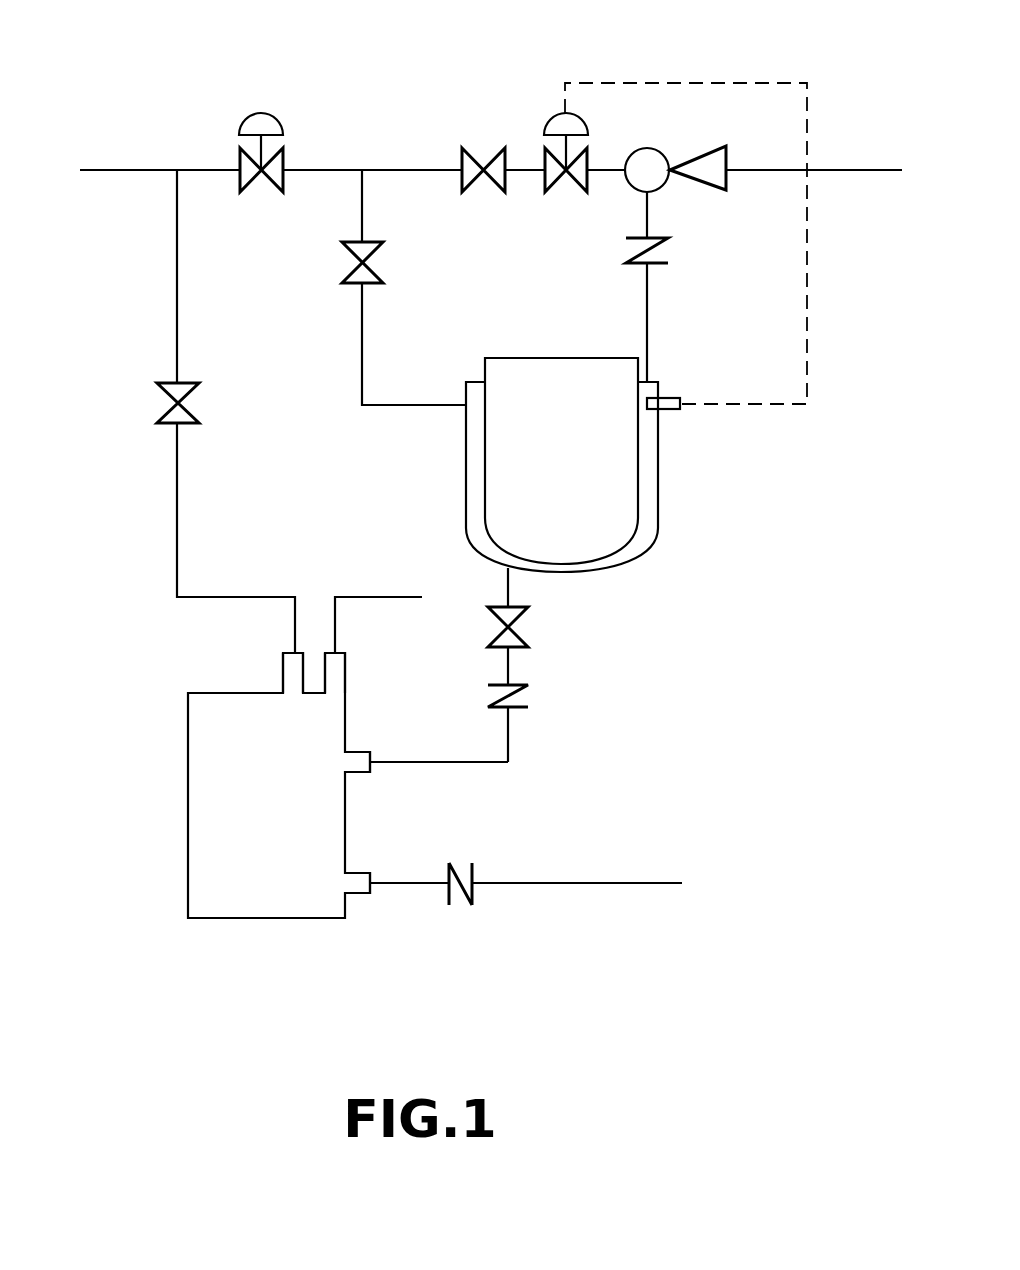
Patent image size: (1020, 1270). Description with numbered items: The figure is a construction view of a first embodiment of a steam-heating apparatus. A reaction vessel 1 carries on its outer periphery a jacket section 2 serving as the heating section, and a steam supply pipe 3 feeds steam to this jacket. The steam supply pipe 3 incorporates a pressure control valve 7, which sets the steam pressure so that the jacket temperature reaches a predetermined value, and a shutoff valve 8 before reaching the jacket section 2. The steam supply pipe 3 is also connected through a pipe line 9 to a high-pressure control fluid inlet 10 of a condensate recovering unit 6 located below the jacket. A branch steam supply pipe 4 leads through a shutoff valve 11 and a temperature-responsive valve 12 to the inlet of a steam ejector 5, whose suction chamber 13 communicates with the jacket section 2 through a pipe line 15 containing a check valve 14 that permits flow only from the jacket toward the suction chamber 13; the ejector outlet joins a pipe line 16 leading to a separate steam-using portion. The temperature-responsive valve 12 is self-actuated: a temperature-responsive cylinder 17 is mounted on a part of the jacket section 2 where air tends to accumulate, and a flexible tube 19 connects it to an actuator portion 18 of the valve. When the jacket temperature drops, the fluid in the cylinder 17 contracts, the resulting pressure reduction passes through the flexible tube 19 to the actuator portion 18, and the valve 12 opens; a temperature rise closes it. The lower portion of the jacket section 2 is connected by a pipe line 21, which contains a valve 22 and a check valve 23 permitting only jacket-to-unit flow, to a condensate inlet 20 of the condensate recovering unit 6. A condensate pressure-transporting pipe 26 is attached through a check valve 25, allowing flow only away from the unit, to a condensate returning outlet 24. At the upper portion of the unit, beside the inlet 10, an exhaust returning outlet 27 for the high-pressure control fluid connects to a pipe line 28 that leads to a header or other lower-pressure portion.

The reaction vessel 1 is at (503, 370).
The jacket section 2 is at (473, 478).
The steam supply pipe 3 is at (100, 170).
The branch steam supply pipe 4 is at (398, 170).
The steam ejector 5 is at (684, 209).
The condensate recovering unit 6 is at (152, 803).
The pressure control valve 7 is at (238, 160).
The shutoff valve 8 is at (352, 285).
The pipe line 9 is at (177, 497).
The high-pressure control fluid inlet 10 is at (290, 672).
The shutoff valve 11 is at (472, 160).
The temperature-responsive valve 12 is at (565, 185).
The suction chamber 13 is at (638, 148).
The check valve 14 is at (636, 265).
The pipe line 15 is at (648, 340).
The pipe line 16 is at (845, 170).
The temperature-responsive cylinder 17 is at (670, 412).
The actuator portion 18 is at (553, 122).
The flexible tube 19 is at (810, 290).
The condensate inlet 20 is at (358, 772).
The pipe line 21 is at (510, 590).
The valve 22 is at (515, 648).
The check valve 23 is at (515, 708).
The condensate returning outlet 24 is at (358, 893).
The check valve 25 is at (475, 893).
The condensate pressure-transporting pipe 26 is at (575, 883).
The exhaust returning outlet 27 is at (338, 672).
The pipe line 28 is at (375, 597).